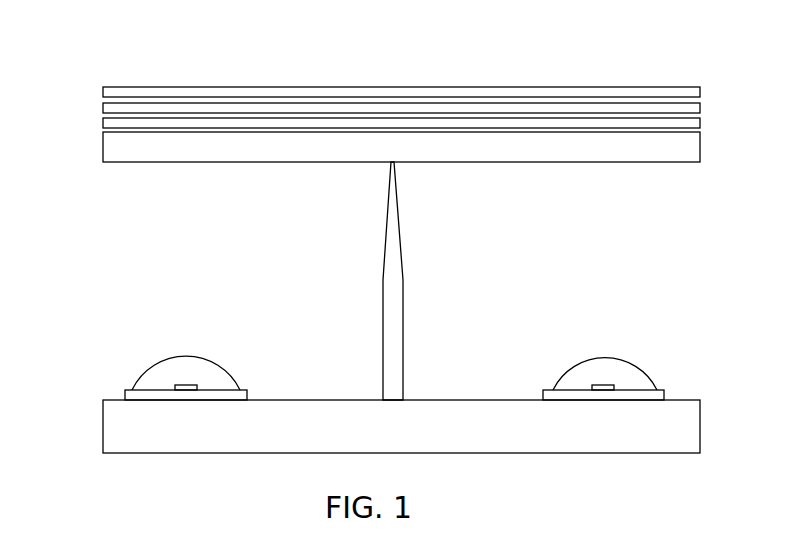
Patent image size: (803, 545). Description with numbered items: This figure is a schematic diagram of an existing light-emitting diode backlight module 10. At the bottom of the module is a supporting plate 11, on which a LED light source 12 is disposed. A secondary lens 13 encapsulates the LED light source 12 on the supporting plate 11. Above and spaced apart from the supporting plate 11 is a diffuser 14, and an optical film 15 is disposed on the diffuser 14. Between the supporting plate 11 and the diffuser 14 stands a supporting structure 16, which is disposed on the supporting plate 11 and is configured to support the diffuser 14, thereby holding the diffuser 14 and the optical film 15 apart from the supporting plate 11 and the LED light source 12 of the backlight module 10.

The LED backlight module 10 is at (432, 56).
The supporting plate 11 is at (112, 430).
The LED light source 12 is at (183, 386).
The secondary lens 13 is at (193, 365).
The diffuser 14 is at (103, 145).
The optical film 15 is at (98, 85).
The supporting structure 16 is at (393, 258).